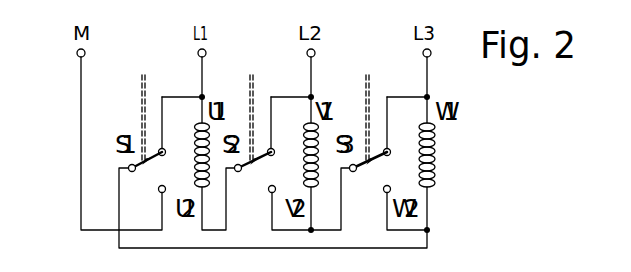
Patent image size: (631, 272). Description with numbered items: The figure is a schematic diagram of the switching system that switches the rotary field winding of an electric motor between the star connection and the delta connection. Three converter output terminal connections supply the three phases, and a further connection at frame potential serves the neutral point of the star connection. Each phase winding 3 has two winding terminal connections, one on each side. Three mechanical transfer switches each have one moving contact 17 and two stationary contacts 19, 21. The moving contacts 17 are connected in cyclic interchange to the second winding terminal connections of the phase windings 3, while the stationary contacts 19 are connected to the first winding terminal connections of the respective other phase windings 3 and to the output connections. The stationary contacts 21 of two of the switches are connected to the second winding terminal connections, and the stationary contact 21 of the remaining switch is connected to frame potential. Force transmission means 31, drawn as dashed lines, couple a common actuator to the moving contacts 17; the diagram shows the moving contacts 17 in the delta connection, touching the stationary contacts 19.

The phase winding 3 is at (209, 176).
The moving contact 17 is at (137, 170).
The stationary contact 19 is at (166, 151).
The stationary contact 21 is at (160, 190).
The force transmission means 31 is at (142, 97).